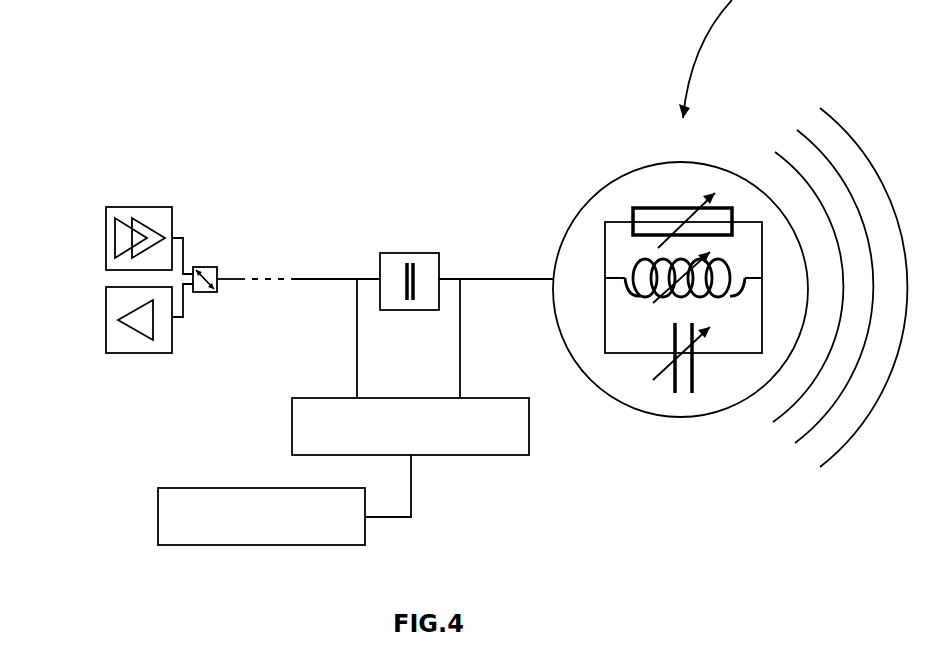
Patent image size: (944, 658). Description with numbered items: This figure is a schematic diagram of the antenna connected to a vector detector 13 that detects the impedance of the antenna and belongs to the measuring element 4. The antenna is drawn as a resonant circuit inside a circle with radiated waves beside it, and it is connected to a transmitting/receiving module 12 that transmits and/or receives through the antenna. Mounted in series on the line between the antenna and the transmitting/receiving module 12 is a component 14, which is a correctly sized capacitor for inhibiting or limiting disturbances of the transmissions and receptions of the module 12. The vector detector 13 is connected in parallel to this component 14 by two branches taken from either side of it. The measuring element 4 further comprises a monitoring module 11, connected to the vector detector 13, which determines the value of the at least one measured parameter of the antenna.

The measuring element 4 is at (232, 422).
The monitoring module 11 is at (192, 528).
The transmitting/receiving module 12 is at (102, 222).
The vector detector 13 is at (513, 437).
The component 14 is at (383, 263).